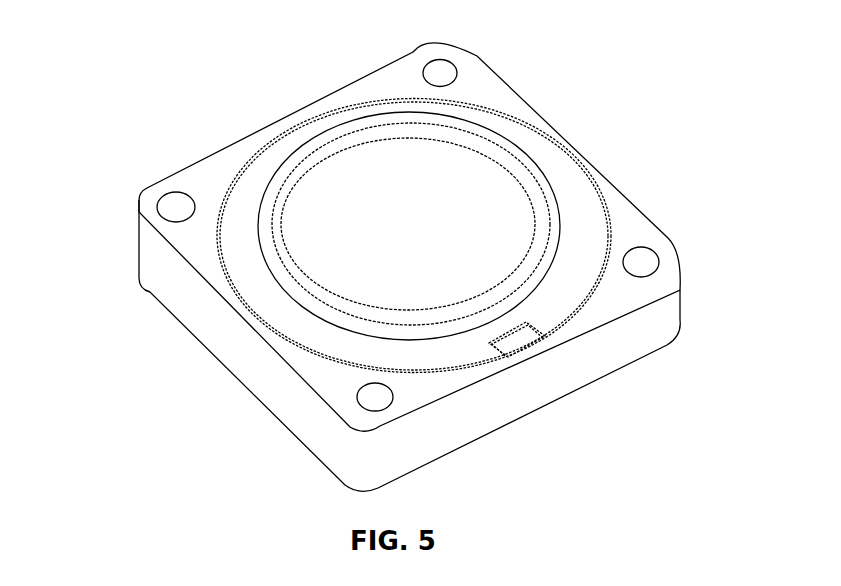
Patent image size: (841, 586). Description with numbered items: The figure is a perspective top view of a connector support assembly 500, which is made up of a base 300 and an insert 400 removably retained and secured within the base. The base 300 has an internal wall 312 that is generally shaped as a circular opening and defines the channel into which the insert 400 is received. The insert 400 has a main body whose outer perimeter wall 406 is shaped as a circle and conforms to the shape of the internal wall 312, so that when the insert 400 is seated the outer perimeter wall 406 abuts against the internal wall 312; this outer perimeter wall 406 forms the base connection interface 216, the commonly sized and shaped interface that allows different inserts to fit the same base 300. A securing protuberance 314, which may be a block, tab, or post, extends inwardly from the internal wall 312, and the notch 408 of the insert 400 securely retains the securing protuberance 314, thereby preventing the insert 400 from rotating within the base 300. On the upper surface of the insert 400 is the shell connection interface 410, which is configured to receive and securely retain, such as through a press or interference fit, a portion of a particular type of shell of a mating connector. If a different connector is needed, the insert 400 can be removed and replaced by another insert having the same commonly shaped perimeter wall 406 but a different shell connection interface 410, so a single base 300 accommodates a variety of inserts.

The connector support assembly 500 is at (137, 42).
The base 300 is at (498, 62).
The internal wall 312 is at (420, 97).
The securing protuberance 314 is at (523, 343).
The base connection interface 216 is at (527, 123).
The insert 400 is at (557, 168).
The outer perimeter wall 406 is at (230, 200).
The notch 408 is at (567, 287).
The shell connection interface 410 is at (328, 137).